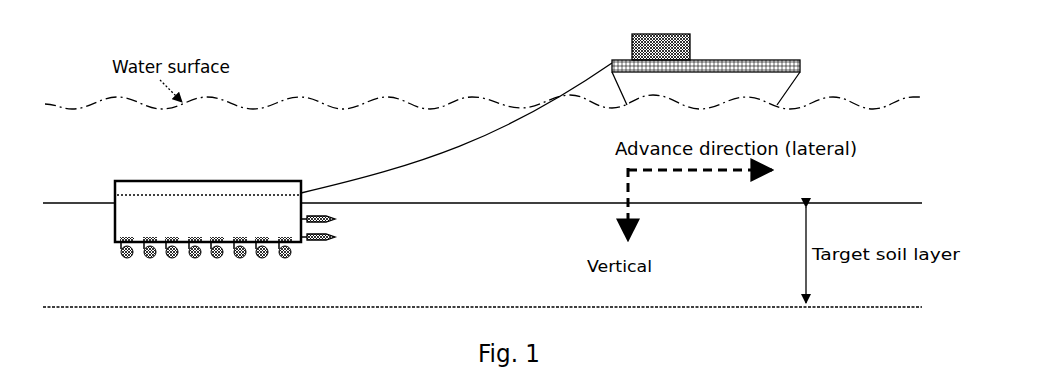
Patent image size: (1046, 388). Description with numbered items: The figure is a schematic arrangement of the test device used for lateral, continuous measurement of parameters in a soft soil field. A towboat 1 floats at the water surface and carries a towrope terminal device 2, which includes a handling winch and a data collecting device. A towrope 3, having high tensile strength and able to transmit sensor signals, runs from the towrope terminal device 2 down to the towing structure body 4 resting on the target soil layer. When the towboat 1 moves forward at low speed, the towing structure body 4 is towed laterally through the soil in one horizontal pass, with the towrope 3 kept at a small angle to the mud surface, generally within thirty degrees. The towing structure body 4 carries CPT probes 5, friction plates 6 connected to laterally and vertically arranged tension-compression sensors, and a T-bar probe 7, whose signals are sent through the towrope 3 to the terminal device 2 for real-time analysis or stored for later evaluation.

The towboat 1 is at (770, 30).
The towrope terminal device 2 is at (665, 6).
The towrope 3 is at (545, 78).
The towing structure body 4 is at (211, 152).
The CPT probe 5 is at (341, 219).
The friction plate 6 is at (274, 236).
The T-bar probe 7 is at (130, 259).